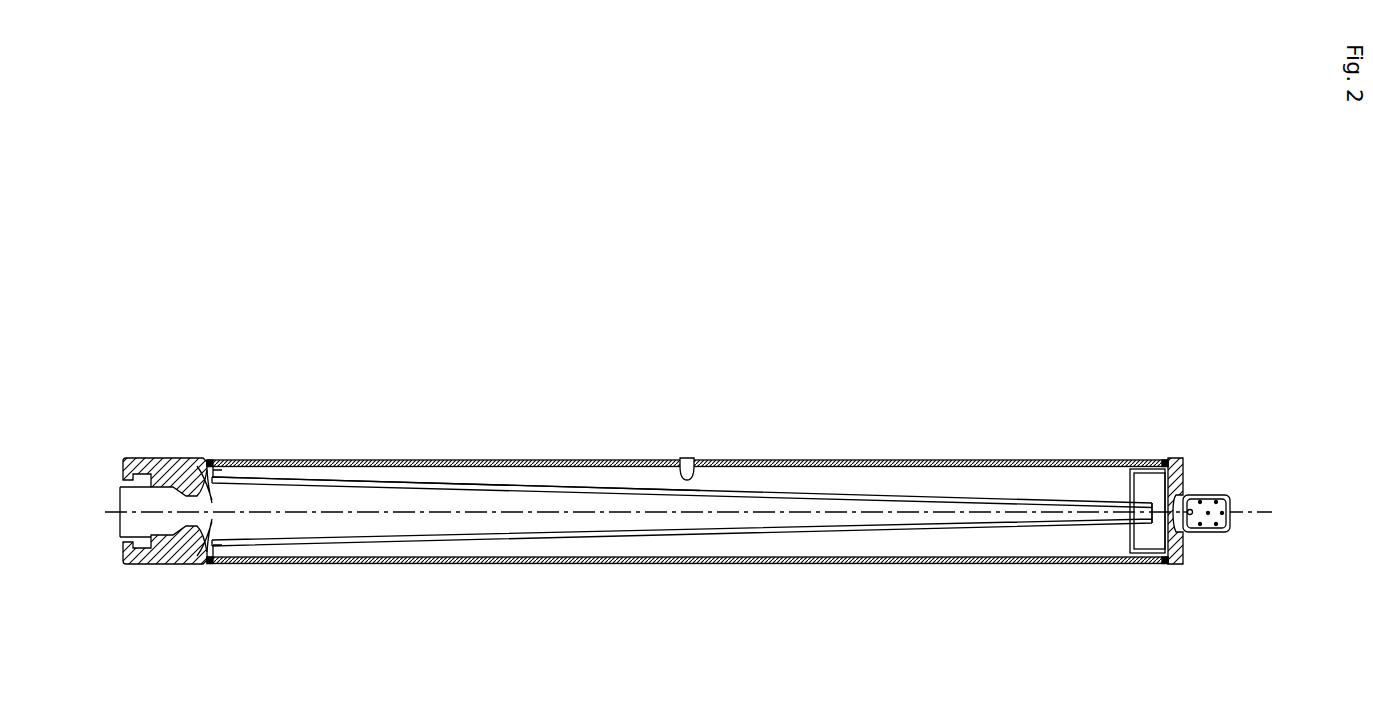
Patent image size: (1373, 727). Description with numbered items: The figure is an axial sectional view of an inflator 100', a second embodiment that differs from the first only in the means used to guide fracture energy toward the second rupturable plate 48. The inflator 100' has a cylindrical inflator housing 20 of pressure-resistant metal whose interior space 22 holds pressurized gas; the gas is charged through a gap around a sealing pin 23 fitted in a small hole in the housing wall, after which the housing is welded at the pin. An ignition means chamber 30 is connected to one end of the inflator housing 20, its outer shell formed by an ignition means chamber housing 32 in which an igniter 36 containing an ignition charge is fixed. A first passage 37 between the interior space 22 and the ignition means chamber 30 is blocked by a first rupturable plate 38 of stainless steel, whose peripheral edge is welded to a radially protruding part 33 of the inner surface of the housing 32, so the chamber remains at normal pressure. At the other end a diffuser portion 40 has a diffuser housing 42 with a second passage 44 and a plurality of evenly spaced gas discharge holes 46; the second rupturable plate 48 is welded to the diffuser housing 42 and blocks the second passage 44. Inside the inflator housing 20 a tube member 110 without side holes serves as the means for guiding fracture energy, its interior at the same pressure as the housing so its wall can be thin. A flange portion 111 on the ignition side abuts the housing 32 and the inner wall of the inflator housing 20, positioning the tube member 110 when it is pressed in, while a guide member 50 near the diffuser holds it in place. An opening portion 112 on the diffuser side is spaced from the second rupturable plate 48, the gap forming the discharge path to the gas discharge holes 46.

The inflator 100' is at (594, 380).
The inflator housing 20 is at (790, 460).
The interior space 22 is at (876, 482).
The sealing pin 23 is at (687, 456).
The ignition means chamber 30 is at (187, 532).
The ignition means chamber housing 32 is at (158, 458).
The radially protruding part of inner surface 33 is at (205, 460).
The igniter 36 is at (122, 528).
The first passage 37 is at (200, 530).
The first rupturable plate 38 is at (214, 540).
The diffuser portion 40 is at (1179, 452).
The diffuser housing 42 is at (1184, 478).
The second passage 44 is at (1177, 545).
The gas discharge holes 46 is at (1210, 532).
The second rupturable plate 48 is at (1167, 548).
The guide member 50 is at (1124, 488).
The tube member 110 is at (661, 537).
The flange portion 111 is at (223, 477).
The opening portion 112 is at (1128, 524).